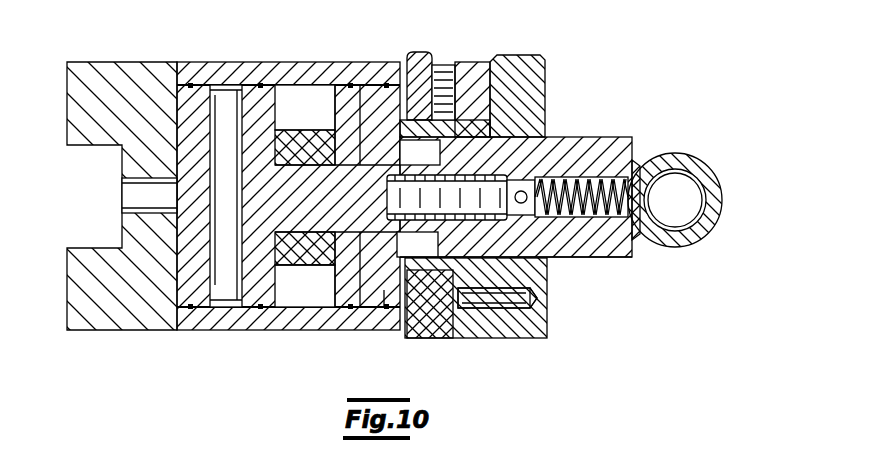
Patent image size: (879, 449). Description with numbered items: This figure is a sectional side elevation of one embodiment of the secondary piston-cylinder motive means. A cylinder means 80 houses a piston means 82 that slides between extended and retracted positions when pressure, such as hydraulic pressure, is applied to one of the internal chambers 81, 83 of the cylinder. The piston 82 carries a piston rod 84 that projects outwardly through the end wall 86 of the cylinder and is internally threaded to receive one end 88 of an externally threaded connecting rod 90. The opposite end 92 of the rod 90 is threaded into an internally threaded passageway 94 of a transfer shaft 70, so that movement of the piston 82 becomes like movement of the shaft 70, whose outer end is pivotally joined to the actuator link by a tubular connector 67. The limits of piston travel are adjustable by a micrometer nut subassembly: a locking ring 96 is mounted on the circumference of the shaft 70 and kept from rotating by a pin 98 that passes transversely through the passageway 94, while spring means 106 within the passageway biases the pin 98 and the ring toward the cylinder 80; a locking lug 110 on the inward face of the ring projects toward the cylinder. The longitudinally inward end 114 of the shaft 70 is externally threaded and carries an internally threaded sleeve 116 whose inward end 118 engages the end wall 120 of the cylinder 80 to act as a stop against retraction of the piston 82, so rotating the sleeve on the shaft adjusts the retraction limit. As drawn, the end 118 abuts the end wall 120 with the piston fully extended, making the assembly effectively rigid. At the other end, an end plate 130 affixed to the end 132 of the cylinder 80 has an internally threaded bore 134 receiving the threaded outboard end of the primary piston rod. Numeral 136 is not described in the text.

The end plate 130 is at (93, 62).
The end of the cylinder 132 is at (188, 62).
The internally threaded bore 134 is at (140, 196).
The cylinder means 80 is at (226, 85).
The internal chamber 81 is at (245, 75).
The piston means 82 is at (305, 85).
The internal chamber 83 is at (325, 62).
The piston rod 84 is at (368, 62).
The end wall of the cylinder 86 is at (412, 62).
The internally threaded sleeve 116 is at (445, 70).
The externally threaded connecting rod 90 is at (460, 95).
The locking ring 96 is at (530, 55).
The opposite end of the connecting rod 92 is at (515, 140).
The transfer shaft 70 is at (595, 138).
The spring means 106 is at (630, 150).
The tubular connector 67 is at (700, 165).
The internally threaded passageway 94 is at (548, 215).
The pin 98 is at (615, 257).
The one end of the connecting rod 88 is at (360, 237).
The locking lug 110 is at (547, 330).
The end wall of the cylinder 120 is at (437, 300).
The longitudinally inward end of the shaft 114 is at (500, 320).
The inward end of the sleeve 118 is at (380, 292).
The piston face 136 is at (297, 267).